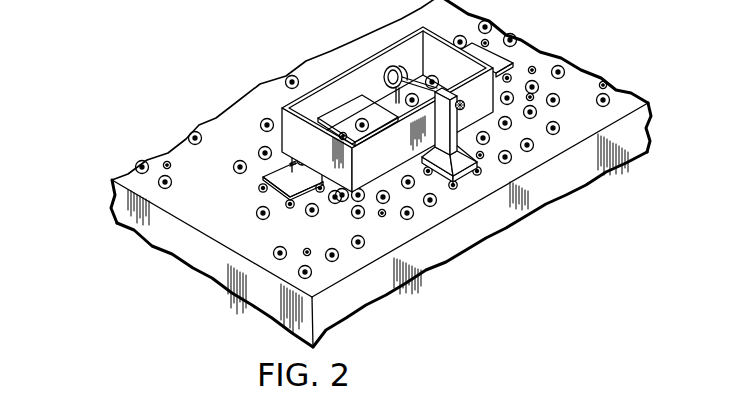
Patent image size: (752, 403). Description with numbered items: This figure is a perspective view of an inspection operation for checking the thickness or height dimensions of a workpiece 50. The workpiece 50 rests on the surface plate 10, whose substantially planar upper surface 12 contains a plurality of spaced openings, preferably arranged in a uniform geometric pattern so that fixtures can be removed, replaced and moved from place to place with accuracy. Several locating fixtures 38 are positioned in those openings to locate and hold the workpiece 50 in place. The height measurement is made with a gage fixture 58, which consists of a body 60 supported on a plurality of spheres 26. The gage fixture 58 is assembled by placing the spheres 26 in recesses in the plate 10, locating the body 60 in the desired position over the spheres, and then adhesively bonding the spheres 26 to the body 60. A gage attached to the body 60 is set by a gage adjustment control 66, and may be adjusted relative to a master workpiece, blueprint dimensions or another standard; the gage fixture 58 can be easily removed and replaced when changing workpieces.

The surface plate 10 is at (214, 266).
The upper surface 12 is at (203, 213).
The spheres 26 is at (432, 176).
The locating fixtures 38 is at (512, 59).
The workpiece 50 is at (331, 67).
The gage fixture 58 is at (489, 187).
The body 60 is at (468, 178).
The gage adjustment control 66 is at (462, 108).